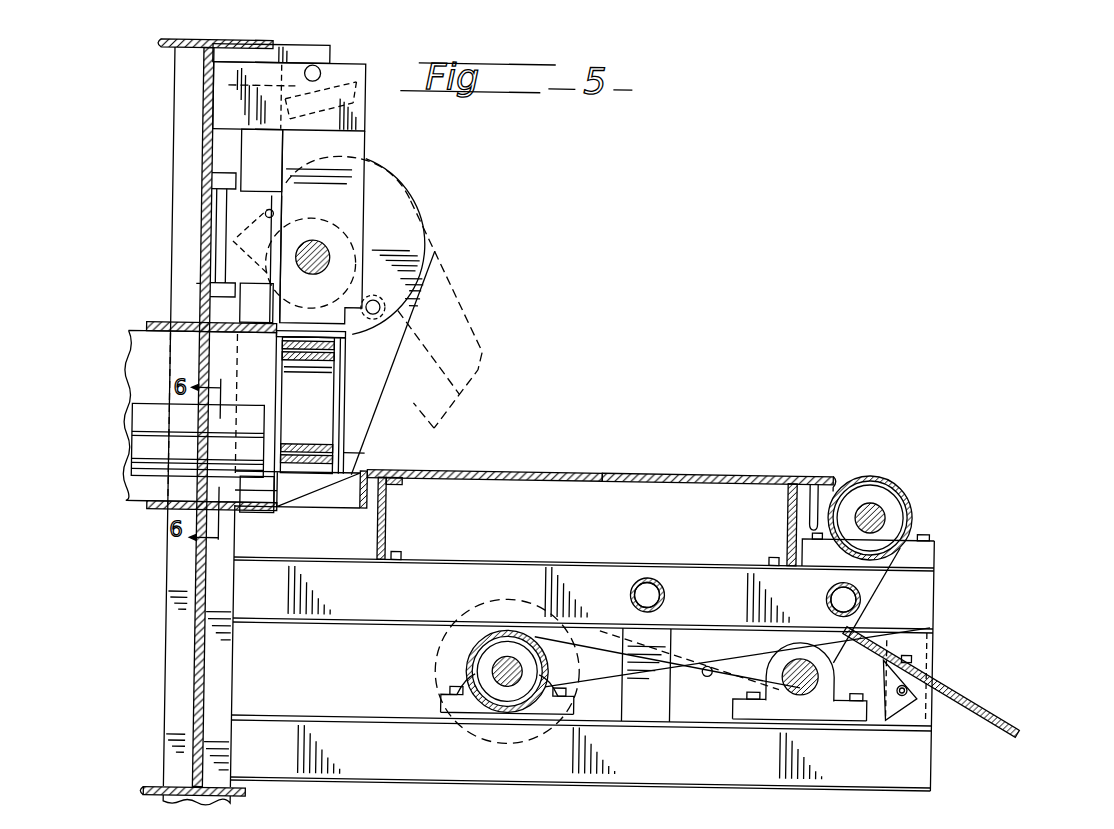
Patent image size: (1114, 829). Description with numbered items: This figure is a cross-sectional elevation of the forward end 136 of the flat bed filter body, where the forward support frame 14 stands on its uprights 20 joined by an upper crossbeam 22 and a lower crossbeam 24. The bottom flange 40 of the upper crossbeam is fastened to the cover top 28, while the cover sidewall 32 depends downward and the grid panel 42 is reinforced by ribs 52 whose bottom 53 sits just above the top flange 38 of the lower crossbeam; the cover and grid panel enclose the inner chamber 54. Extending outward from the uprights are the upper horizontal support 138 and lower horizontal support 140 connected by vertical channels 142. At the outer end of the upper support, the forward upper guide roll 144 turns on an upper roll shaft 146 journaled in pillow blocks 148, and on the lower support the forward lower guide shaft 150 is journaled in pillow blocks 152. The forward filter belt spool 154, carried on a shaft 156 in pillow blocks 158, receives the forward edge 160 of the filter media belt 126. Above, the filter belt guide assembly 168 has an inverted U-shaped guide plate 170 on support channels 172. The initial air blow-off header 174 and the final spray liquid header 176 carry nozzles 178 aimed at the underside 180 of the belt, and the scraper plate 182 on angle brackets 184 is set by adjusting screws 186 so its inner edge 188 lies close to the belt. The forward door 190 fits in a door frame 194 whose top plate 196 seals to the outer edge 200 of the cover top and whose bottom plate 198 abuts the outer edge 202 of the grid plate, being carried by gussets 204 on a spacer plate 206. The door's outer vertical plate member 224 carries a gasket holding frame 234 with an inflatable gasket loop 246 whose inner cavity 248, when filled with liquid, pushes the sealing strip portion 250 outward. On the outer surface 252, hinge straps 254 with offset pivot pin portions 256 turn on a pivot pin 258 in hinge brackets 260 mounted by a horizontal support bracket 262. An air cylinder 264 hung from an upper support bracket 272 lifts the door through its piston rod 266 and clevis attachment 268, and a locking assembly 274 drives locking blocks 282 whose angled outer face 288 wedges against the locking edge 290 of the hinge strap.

The forward support frame 14 is at (233, 803).
The upright 20 is at (174, 674).
The upper crossbeam 22 is at (191, 284).
The lower crossbeam 24 is at (149, 790).
The cover top 28 is at (136, 369).
The cover sidewall 32 is at (139, 407).
The top flange 38 is at (175, 503).
The bottom flange 40 is at (142, 326).
The grid panel 42 is at (238, 490).
The rib 52 is at (178, 511).
The rib bottom 53 is at (138, 509).
The inner chamber 54 is at (139, 389).
The filter media belt 126 is at (833, 465).
The forward end 136 is at (488, 300).
The upper horizontal support 138 is at (927, 584).
The lower horizontal support 140 is at (929, 749).
The vertical channel 142 is at (644, 690).
The forward upper guide roll 144 is at (902, 500).
The upper roll shaft 146 is at (876, 508).
The pillow block 148 is at (936, 535).
The forward lower guide shaft 150 is at (784, 648).
The pillow block 152 is at (814, 712).
The forward filter belt spool 154 is at (478, 636).
The shaft 156 is at (516, 662).
The pillow block 158 is at (447, 693).
The forward edge 160 is at (463, 620).
The filter belt guide assembly 168 is at (497, 477).
The guide plate 170 is at (628, 468).
The support channel 172 is at (385, 518).
The initial air blow-off header 174 is at (828, 582).
The final spray liquid header 176 is at (646, 572).
The nozzle 178 is at (672, 603).
The underside 180 is at (704, 668).
The scraper plate 182 is at (995, 698).
The angle bracket 184 is at (908, 722).
The adjusting screw 186 is at (914, 652).
The inner edge 188 is at (913, 604).
The forward door 190 is at (364, 430).
The door frame 194 is at (283, 337).
The top plate 196 is at (398, 300).
The bottom plate 198 is at (347, 482).
The outer edge 200 is at (281, 335).
The outer edge 202 is at (308, 505).
The gusset 204 is at (331, 506).
The spacer plate 206 is at (252, 520).
The outer vertical plate member 224 is at (344, 387).
The gasket holding frame 234 is at (305, 385).
The inflatable gasket loop 246 is at (362, 452).
The inner cavity 248 is at (340, 360).
The sealing strip portion 250 is at (286, 336).
The outer surface 252 is at (449, 401).
The hinge strap 254 is at (395, 337).
The offset pivot pin portion 256 is at (385, 166).
The pivot pin 258 is at (322, 250).
The hinge bracket 260 is at (351, 140).
The horizontal support bracket 262 is at (352, 71).
The air cylinder 264 is at (350, 104).
The piston rod 266 is at (405, 236).
The clevis attachment 268 is at (427, 251).
The upper support bracket 272 is at (300, 46).
The locking assembly 274 is at (222, 172).
The locking block 282 is at (256, 185).
The outer face 288 is at (259, 212).
The locking edge 290 is at (231, 239).